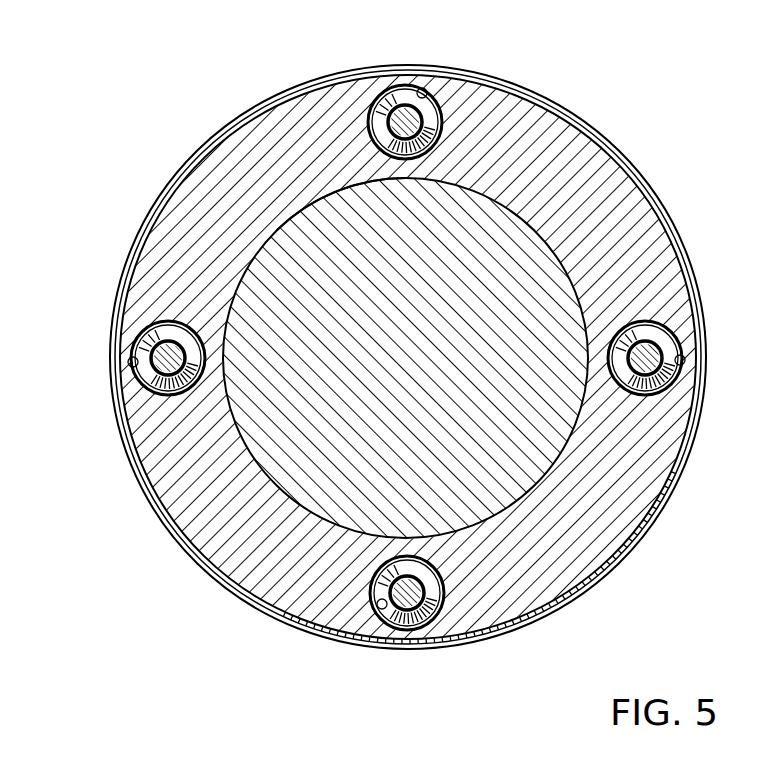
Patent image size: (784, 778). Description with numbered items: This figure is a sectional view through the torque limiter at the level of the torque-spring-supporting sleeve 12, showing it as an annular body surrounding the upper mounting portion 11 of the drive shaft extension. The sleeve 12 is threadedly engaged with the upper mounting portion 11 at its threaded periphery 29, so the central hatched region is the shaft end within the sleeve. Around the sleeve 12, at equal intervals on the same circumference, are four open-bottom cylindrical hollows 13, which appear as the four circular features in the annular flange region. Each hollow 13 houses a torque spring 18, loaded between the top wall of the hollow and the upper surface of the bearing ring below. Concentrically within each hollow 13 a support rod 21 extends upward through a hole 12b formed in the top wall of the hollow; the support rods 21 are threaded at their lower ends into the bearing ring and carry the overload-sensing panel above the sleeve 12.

The upper mounting portion 11 is at (338, 222).
The torque-spring-supporting sleeve 12 is at (263, 163).
The hole 12b is at (440, 115).
The open-bottom cylindrical hollow 13 is at (416, 92).
The torque spring 18 is at (372, 102).
The support rod 21 is at (398, 112).
The threaded periphery 29 is at (277, 230).